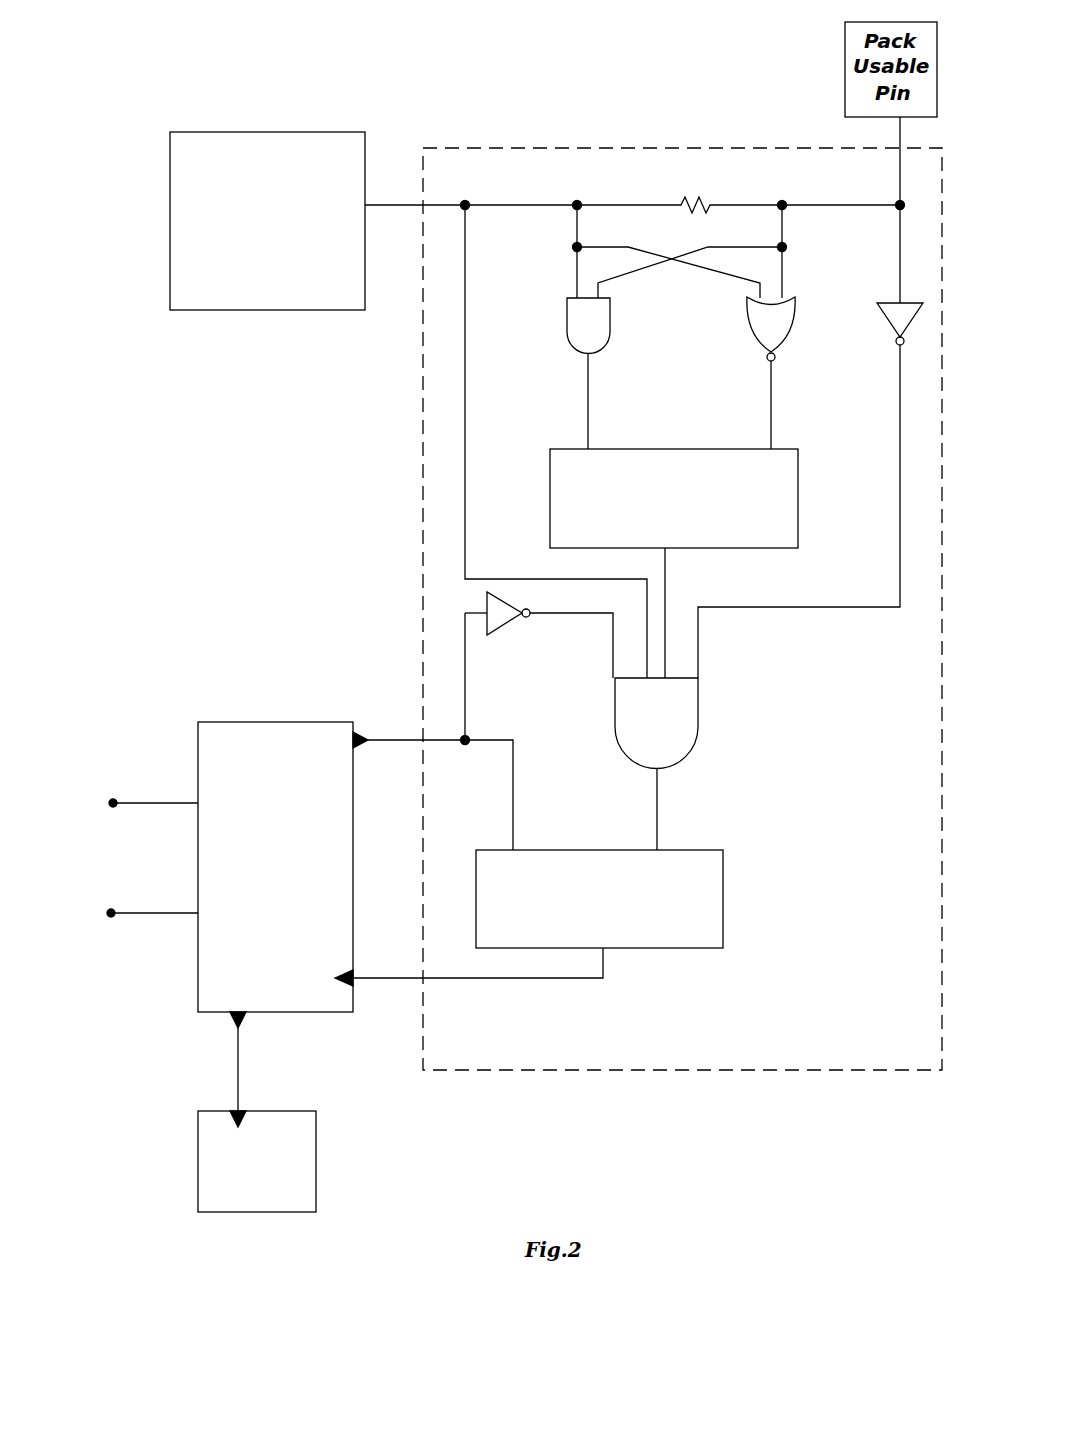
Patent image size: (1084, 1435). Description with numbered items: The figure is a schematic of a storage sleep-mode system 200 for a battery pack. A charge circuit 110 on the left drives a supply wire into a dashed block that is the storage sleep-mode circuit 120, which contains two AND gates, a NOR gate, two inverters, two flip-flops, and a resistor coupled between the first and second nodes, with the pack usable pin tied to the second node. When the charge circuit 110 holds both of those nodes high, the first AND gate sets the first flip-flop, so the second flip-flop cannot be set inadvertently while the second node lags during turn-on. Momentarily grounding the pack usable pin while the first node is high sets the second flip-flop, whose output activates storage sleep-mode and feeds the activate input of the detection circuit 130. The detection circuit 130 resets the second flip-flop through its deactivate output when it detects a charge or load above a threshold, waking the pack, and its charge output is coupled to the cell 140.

The charge circuit 110 is at (298, 132).
The storage sleep-mode circuit 120 is at (497, 148).
The detection circuit 130 is at (243, 722).
The cell 140 is at (288, 1111).
The storage sleep-mode system 200 is at (668, 62).